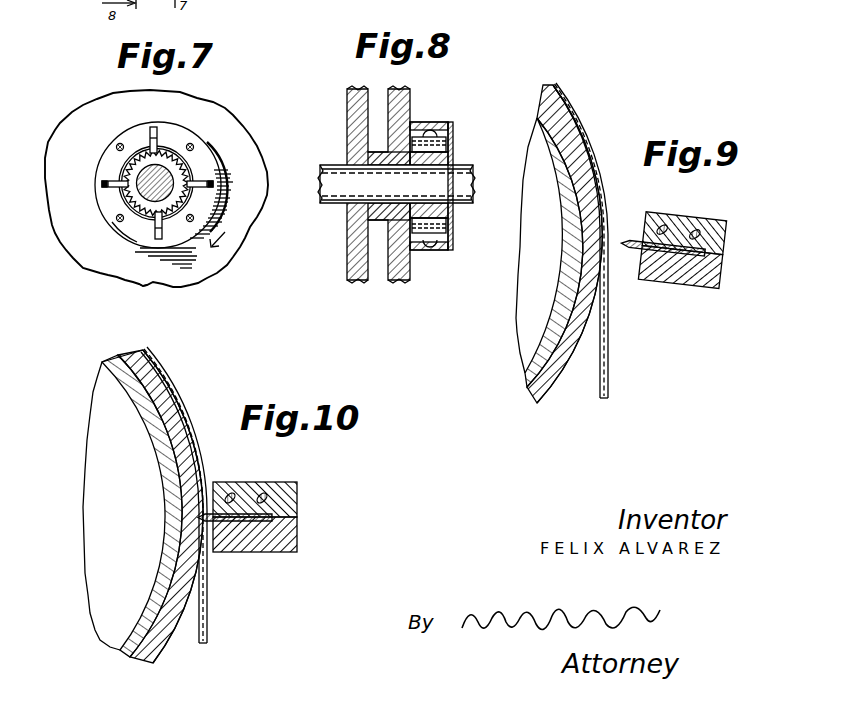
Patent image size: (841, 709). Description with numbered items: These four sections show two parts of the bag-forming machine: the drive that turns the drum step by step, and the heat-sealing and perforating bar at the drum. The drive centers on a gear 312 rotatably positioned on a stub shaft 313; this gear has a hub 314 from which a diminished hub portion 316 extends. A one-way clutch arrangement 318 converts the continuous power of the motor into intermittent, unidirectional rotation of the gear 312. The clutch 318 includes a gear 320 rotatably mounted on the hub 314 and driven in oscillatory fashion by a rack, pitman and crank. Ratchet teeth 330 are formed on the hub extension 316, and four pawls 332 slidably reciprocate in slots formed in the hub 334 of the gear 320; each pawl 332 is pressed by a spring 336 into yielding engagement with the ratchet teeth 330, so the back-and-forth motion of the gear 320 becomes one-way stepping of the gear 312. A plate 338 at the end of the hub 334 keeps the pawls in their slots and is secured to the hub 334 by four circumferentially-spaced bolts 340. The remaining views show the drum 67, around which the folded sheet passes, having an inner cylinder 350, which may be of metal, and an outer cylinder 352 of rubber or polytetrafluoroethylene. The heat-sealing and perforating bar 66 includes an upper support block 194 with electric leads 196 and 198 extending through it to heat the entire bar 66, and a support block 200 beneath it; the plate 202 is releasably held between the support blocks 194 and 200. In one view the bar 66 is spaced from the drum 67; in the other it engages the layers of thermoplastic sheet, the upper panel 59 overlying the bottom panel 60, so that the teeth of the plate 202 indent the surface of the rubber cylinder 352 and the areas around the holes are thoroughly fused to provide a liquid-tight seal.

In FIG. 8, the gear 312 is at (347, 142).
In FIG. 7, the stub shaft 313 is at (140, 188).
In FIG. 8, the stub shaft 313 is at (335, 200).
In FIG. 8, the hub 314 is at (372, 213).
In FIG. 7, the diminished hub portion 316 is at (130, 167).
In FIG. 8, the diminished hub portion 316 is at (437, 207).
In FIG. 7, the one-way clutch arrangement 318 is at (80, 266).
In FIG. 7, the gear 320 is at (145, 282).
In FIG. 7, the ratchet teeth 330 is at (218, 207).
In FIG. 7, the pawls 332 is at (152, 140).
In FIG. 7, the hub 334 is at (133, 230).
In FIG. 8, the hub 334 is at (443, 106).
In FIG. 7, the spring 336 is at (213, 184).
In FIG. 8, the spring 336 is at (442, 130).
In FIG. 8, the plate 338 is at (453, 144).
In FIG. 7, the bolts 340 is at (116, 219).
In FIG. 9, the inner cylinder 350 is at (572, 272).
In FIG. 10, the inner cylinder 350 is at (160, 457).
In FIG. 9, the outer cylinder 352 is at (565, 378).
In FIG. 10, the outer cylinder 352 is at (177, 393).
In FIG. 9, the upper plastic panel 59 is at (607, 326).
In FIG. 10, the upper plastic panel 59 is at (209, 623).
In FIG. 9, the bottom plastic panel 60 is at (604, 350).
In FIG. 10, the bottom plastic panel 60 is at (203, 650).
In FIG. 9, the heat-sealing and perforating bar 66 is at (688, 291).
In FIG. 9, the drum 67 is at (580, 102).
In FIG. 10, the drum 67 is at (176, 371).
In FIG. 10, the upper support block 194 is at (298, 502).
In FIG. 9, the electric lead 196 is at (684, 207).
In FIG. 10, the electric lead 196 is at (232, 495).
In FIG. 9, the electric lead 198 is at (706, 216).
In FIG. 10, the electric lead 198 is at (287, 487).
In FIG. 10, the support block 200 is at (298, 547).
In FIG. 9, the plate 202 is at (630, 246).
In FIG. 10, the plate 202 is at (223, 522).